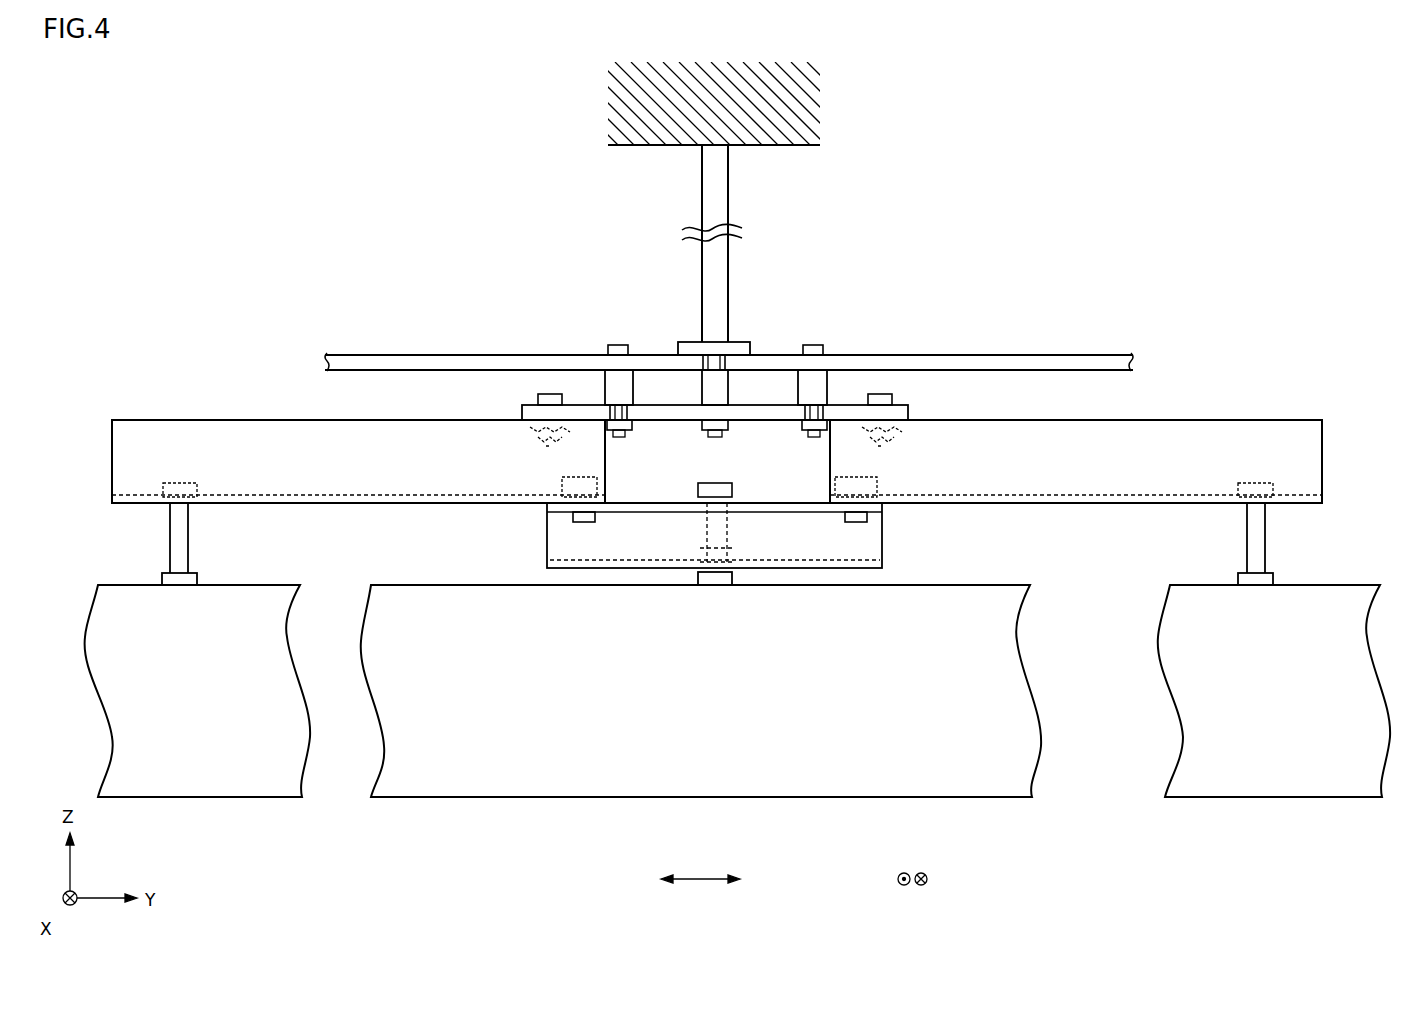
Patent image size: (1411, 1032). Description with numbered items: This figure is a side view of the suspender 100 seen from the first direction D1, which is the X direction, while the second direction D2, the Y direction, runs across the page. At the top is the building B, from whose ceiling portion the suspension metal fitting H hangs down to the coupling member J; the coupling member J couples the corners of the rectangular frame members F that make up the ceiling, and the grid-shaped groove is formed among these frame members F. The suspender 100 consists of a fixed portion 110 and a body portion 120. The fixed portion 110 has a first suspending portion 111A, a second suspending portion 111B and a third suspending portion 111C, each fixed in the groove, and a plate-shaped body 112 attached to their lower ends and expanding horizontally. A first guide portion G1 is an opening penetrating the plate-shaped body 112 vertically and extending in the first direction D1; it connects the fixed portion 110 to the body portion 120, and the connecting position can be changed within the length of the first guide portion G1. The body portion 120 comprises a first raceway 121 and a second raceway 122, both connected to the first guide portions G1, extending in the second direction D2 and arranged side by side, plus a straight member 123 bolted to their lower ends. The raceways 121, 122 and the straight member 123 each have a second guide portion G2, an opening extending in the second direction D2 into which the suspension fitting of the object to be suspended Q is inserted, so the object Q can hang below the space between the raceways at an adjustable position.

The suspender 100 is at (340, 148).
The fixed portion 110 is at (628, 318).
The first suspending portion 111A is at (607, 388).
The second suspending portion 111B is at (828, 387).
The third suspending portion 111C is at (722, 387).
The plate-shaped body 112 is at (898, 413).
The body portion 120 is at (1325, 400).
The first raceway 121 is at (178, 430).
The second raceway 122 is at (1277, 430).
The straight member 123 is at (870, 543).
The building B is at (800, 118).
The suspension metal fitting H is at (714, 189).
The coupling member J is at (712, 347).
The frame member F is at (455, 355).
The first guide portion G1 is at (632, 412).
The second guide portion G2 is at (112, 496).
The object to be suspended Q is at (267, 809).
The first direction D1 is at (911, 898).
The second direction D2 is at (700, 899).